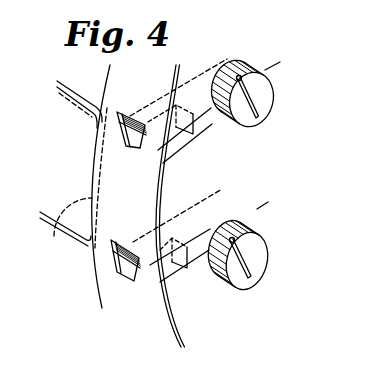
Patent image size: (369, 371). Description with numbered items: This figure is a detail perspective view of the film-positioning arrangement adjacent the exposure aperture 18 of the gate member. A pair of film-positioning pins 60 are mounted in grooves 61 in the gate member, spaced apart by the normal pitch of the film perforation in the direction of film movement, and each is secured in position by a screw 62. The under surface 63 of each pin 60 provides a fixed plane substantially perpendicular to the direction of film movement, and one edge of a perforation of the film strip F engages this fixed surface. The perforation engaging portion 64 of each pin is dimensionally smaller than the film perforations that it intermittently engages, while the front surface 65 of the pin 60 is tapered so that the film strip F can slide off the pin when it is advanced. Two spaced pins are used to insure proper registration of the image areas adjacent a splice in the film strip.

The aperture 18 is at (54, 236).
The film-positioning pins 60 is at (205, 120).
The grooves 61 is at (170, 142).
The screws 62 is at (263, 100).
The under surface 63 is at (140, 147).
The perforation engaging portion 64 is at (142, 140).
The front surface 65 is at (118, 133).
The film strip F is at (158, 199).